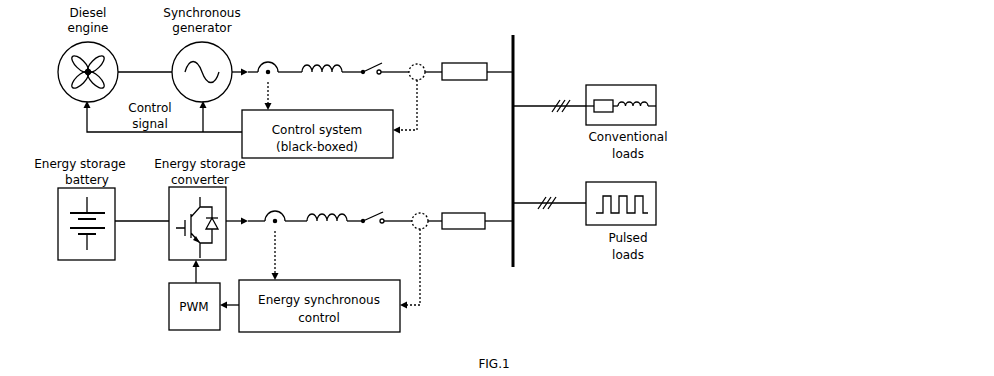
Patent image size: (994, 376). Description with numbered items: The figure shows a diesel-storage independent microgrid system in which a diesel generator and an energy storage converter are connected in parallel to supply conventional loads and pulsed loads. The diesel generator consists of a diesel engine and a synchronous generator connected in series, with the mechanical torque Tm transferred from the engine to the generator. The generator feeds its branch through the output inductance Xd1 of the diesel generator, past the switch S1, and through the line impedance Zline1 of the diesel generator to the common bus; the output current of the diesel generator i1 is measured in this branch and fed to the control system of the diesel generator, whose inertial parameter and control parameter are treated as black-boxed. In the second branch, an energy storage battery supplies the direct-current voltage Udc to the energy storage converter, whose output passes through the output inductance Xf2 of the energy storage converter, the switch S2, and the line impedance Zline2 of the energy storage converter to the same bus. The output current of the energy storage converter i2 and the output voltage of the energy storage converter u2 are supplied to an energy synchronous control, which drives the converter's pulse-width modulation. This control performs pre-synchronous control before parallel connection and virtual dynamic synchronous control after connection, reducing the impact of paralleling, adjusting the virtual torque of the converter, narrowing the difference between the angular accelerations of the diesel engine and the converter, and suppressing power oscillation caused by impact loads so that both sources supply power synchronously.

The mechanical torque from diesel engine to synchronous generator Tm is at (145, 62).
The output current of the diesel generator i1 is at (275, 77).
The output inductance of the diesel generator Xd1 is at (332, 83).
The generator branch switch S1 is at (386, 82).
The output voltage of the energy storage converter u2 is at (410, 176).
The line impedance of the diesel generator Zline1 is at (469, 85).
The energy storage DC voltage Udc is at (142, 208).
The output current of the energy storage converter i2 is at (277, 236).
The output inductance of the energy storage converter Xf2 is at (335, 232).
The energy storage branch switch S2 is at (387, 231).
The line impedance of the energy storage converter Zline2 is at (470, 234).